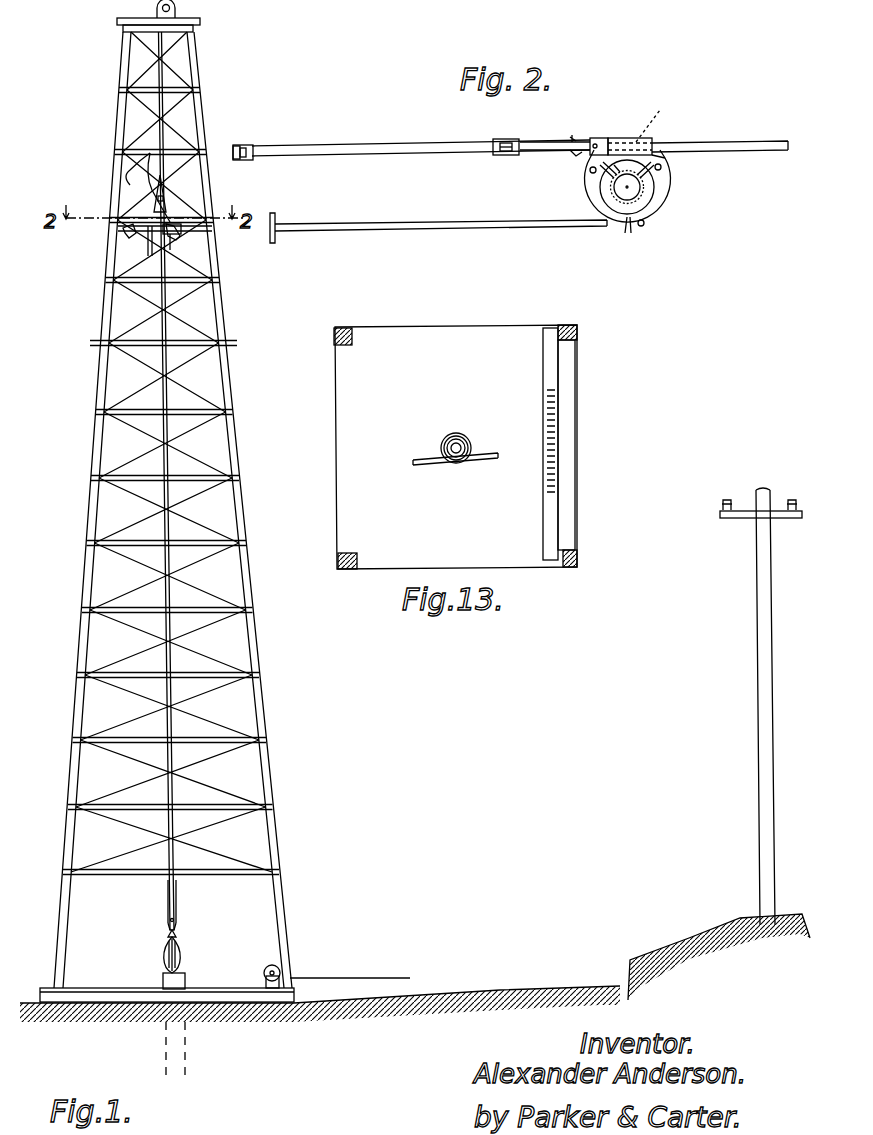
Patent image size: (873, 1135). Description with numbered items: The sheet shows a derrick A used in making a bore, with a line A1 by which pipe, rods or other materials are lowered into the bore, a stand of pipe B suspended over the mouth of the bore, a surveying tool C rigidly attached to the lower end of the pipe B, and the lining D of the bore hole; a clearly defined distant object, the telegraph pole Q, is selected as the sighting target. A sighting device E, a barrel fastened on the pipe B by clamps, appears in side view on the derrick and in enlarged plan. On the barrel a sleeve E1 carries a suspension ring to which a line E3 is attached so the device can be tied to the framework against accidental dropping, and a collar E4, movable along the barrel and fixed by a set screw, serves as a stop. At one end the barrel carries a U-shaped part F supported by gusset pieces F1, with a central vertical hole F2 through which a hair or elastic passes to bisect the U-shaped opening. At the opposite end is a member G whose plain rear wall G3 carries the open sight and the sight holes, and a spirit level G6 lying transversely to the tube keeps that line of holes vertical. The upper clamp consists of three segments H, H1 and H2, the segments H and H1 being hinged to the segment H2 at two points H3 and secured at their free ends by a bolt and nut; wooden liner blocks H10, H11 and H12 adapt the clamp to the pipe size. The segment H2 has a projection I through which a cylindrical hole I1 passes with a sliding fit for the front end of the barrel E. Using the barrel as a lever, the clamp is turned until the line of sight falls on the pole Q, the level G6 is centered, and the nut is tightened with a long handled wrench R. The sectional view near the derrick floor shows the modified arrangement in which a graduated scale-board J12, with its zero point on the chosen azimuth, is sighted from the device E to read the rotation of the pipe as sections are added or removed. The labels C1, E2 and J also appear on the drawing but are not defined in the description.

In FIG. 1, the derrick A is at (118, 468).
In FIG. 13, the derrick A is at (333, 338).
In FIG. 1, the line A1 is at (183, 122).
In FIG. 1, the stand of pipe B is at (160, 396).
In FIG. 2, the stand of pipe B is at (645, 188).
In FIG. 1, the surveying tool C is at (167, 897).
In FIG. 1, the drill bit C1 is at (182, 946).
In FIG. 1, the lining of the bore hole D is at (162, 976).
In FIG. 13, the lining of the bore hole D is at (462, 443).
In FIG. 1, the sighting device E is at (186, 226).
In FIG. 2, the sighting device E is at (386, 146).
In FIG. 13, the sighting device E is at (484, 461).
In FIG. 2, the sleeve E1 is at (506, 140).
In FIG. 1, the clamp member E2 is at (164, 226).
In FIG. 2, the clamp member E2 is at (505, 156).
In FIG. 1, the line E3 is at (150, 175).
In FIG. 1, the collar E4 is at (158, 214).
In FIG. 2, the collar E4 is at (598, 138).
In FIG. 1, the U-shaped part F is at (146, 244).
In FIG. 2, the U-shaped part F is at (578, 140).
In FIG. 2, the gusset pieces F1 is at (541, 145).
In FIG. 2, the hole F2 is at (574, 155).
In FIG. 1, the member G is at (124, 233).
In FIG. 2, the member G is at (254, 148).
In FIG. 2, the rear wall G3 is at (234, 150).
In FIG. 2, the spirit level G6 is at (244, 147).
In FIG. 2, the clamp segment H is at (606, 227).
In FIG. 1, the clamp segment H1 is at (176, 222).
In FIG. 2, the clamp segment H1 is at (656, 218).
In FIG. 2, the clamp segment H2 is at (648, 152).
In FIG. 2, the hinge points H3 is at (590, 173).
In FIG. 2, the wooden liner block H10 is at (604, 195).
In FIG. 2, the wooden liner block H11 is at (645, 203).
In FIG. 2, the wooden liner block H12 is at (616, 165).
In FIG. 2, the projection I is at (632, 140).
In FIG. 2, the cylindrical hole I1 is at (652, 115).
In FIG. 1, the hanger J is at (172, 236).
In FIG. 13, the graduated scale-board J12 is at (551, 372).
In FIG. 1, the telegraph pole Q is at (761, 490).
In FIG. 2, the long handled wrench R is at (512, 233).